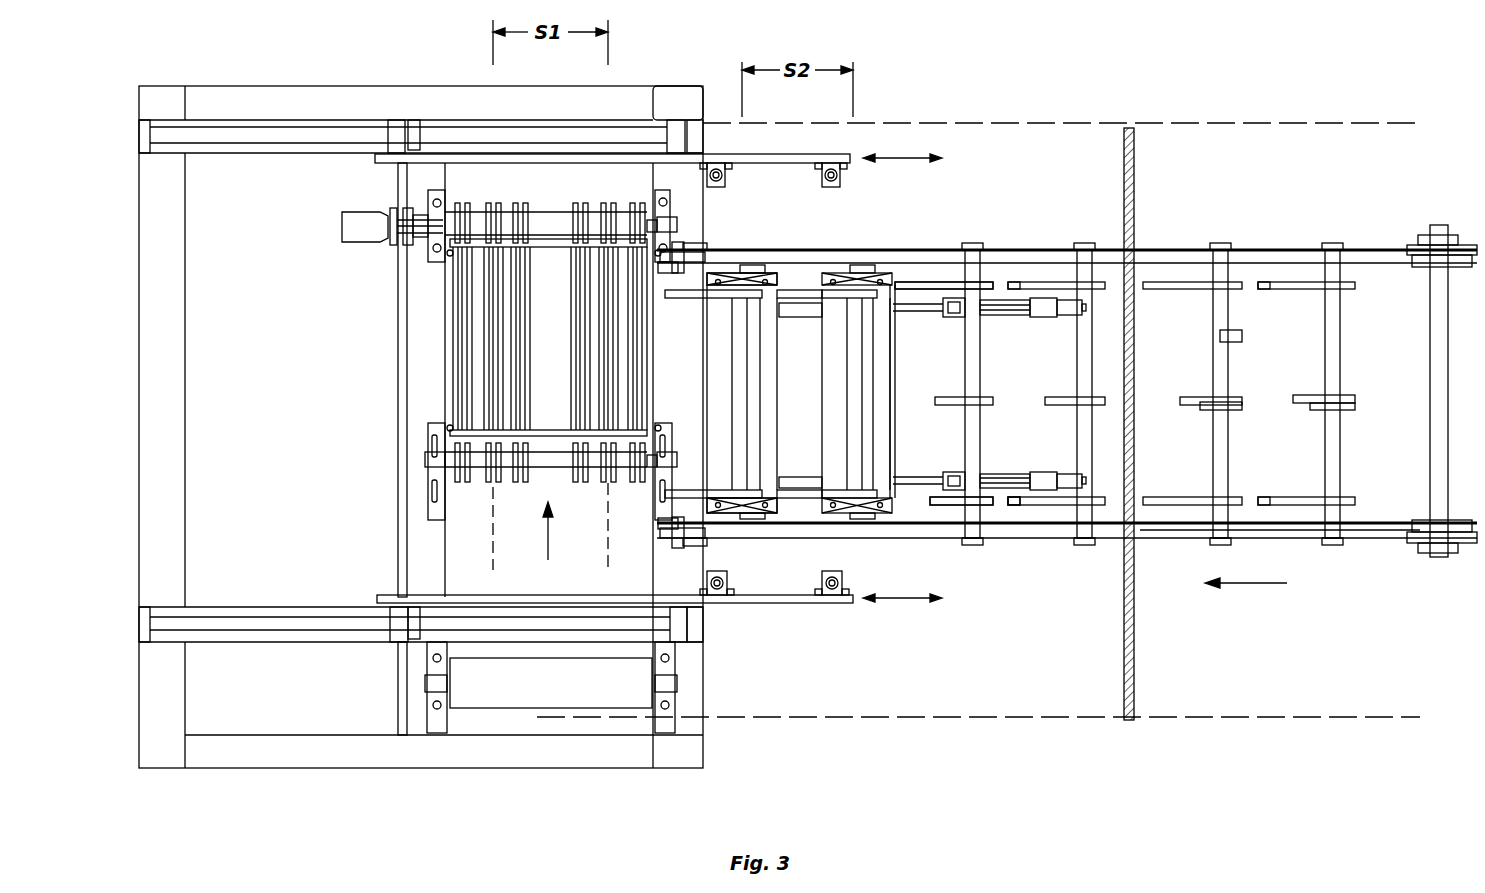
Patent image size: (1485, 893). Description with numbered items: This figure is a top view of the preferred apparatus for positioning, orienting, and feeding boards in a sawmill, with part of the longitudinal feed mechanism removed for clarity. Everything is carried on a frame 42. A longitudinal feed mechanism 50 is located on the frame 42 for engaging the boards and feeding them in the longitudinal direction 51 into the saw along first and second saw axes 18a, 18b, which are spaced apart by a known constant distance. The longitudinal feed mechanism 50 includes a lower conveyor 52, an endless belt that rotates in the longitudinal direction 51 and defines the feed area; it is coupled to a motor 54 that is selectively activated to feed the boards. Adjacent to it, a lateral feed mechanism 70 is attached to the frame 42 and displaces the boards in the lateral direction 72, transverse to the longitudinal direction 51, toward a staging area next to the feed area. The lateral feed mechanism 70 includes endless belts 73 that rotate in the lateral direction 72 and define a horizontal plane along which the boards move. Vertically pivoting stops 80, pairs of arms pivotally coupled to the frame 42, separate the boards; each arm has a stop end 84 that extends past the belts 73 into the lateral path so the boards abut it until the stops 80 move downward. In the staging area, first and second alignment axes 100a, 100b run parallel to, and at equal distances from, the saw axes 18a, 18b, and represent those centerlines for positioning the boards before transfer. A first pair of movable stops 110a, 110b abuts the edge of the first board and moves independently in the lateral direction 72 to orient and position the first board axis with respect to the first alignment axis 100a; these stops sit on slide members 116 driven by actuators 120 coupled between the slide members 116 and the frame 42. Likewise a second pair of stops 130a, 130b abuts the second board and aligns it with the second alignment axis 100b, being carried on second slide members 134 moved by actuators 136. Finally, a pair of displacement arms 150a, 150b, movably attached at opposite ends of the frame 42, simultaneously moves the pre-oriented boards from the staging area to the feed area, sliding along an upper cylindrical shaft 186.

The frame 42 is at (421, 427).
The longitudinal feed mechanism 50 is at (512, 485).
The longitudinal direction 51 is at (548, 530).
The lower conveyor 52 is at (592, 208).
The motor 54 is at (340, 232).
The lateral feed mechanism 70 is at (1163, 252).
The lateral direction 72 is at (1246, 585).
The endless belts 73 is at (1370, 530).
The stops 80 is at (1055, 505).
The stop end 84 is at (1018, 505).
The first alignment axis 100a is at (740, 85).
The second alignment axis 100b is at (857, 90).
The first stop 110a is at (682, 295).
The second stop 110b is at (665, 494).
The slide members 116 is at (760, 392).
The actuators 120 is at (792, 473).
The first stop of second pair 130a is at (793, 497).
The second stop of second pair 130b is at (787, 295).
The second slide members 134 is at (878, 378).
The actuators 136 is at (923, 480).
The displacement arm 150a is at (770, 603).
The displacement arm 150b is at (770, 167).
The first saw axis 18a is at (493, 550).
The second saw axis 18b is at (610, 565).
The upper cylindrical shaft 186 is at (243, 625).